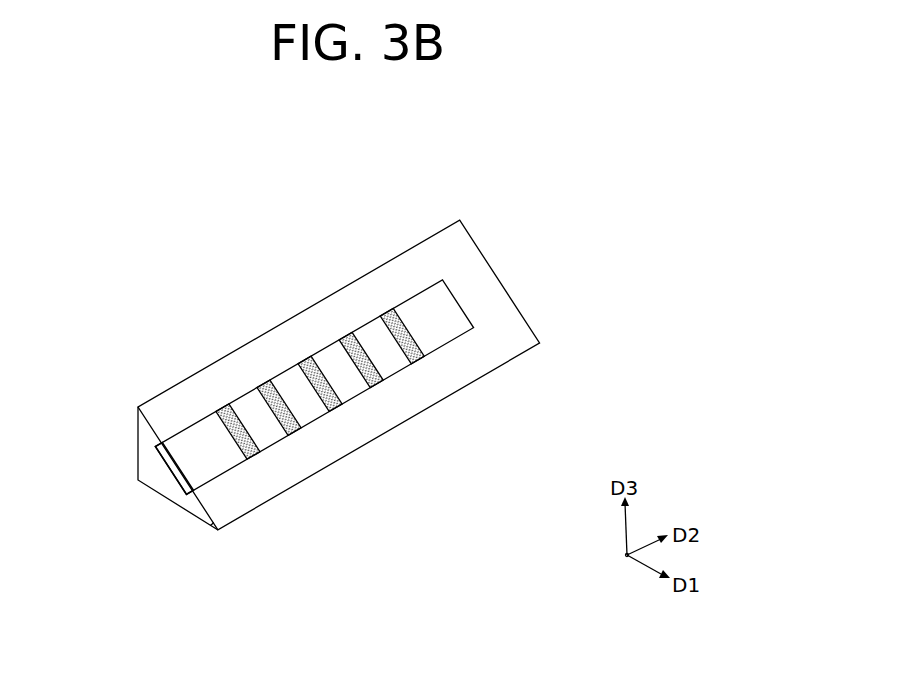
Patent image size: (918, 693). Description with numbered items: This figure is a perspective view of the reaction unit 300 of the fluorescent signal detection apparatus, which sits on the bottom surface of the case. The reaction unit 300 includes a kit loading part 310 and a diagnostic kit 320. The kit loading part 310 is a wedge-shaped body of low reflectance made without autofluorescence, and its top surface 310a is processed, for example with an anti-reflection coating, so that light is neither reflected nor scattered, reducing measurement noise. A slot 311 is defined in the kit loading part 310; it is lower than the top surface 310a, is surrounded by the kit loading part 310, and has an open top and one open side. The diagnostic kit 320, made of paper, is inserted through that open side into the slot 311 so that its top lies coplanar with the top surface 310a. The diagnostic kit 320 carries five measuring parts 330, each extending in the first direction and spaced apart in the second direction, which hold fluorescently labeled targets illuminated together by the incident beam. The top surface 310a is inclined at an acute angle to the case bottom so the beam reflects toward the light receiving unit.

The reaction unit 300 is at (626, 141).
The kit loading part 310 is at (150, 462).
The top surface of the kit loading part 310a is at (437, 254).
The slot 311 is at (460, 300).
The diagnostic kit 320 is at (166, 471).
The measuring parts 330 is at (305, 424).